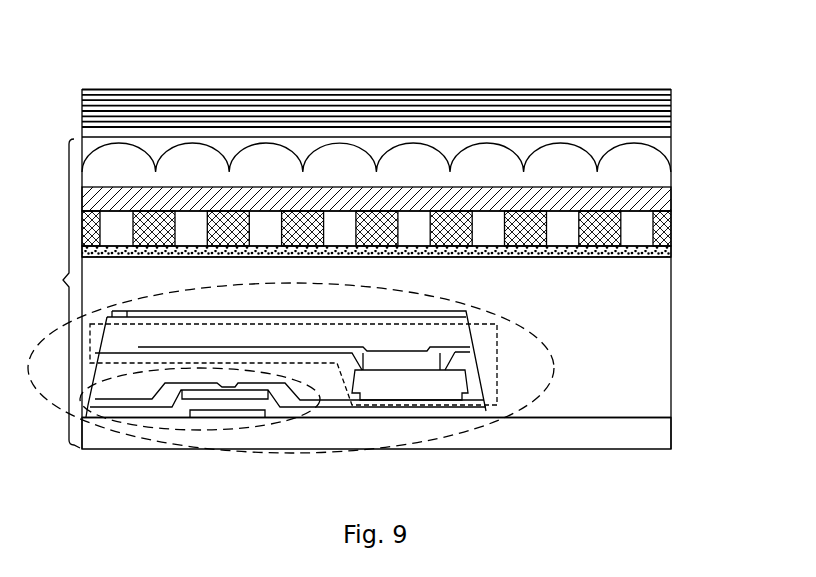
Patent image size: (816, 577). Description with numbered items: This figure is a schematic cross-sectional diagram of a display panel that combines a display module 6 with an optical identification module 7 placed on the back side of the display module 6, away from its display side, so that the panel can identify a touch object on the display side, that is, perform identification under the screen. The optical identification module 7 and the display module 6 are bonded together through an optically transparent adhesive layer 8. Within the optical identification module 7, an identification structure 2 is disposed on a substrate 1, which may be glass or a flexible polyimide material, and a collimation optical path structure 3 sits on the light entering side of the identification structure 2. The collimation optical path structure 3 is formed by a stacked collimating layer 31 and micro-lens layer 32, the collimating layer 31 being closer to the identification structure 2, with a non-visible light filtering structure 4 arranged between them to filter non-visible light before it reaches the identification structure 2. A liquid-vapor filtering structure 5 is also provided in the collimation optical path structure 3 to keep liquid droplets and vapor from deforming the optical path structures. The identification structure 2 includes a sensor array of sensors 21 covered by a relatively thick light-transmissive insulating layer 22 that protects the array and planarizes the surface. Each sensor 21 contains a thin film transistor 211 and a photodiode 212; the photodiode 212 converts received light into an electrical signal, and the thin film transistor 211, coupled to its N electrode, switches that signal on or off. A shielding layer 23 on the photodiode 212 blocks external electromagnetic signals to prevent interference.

The substrate 1 is at (632, 433).
The identification structure 2 is at (672, 337).
The collimation optical path structure 3 is at (416, 192).
The non-visible light filtering structure 4 is at (662, 197).
The liquid-vapor filtering structure 5 is at (671, 251).
The display module 6 is at (637, 102).
The optical identification module 7 is at (65, 293).
The optically transparent adhesive layer 8 is at (93, 135).
The sensor 21 is at (47, 336).
The light-transmissive insulating layer 22 is at (648, 293).
The shielding layer 23 is at (112, 314).
The collimating layer 31 is at (408, 228).
The micro-lens layer 32 is at (671, 157).
The thin film transistor 211 is at (190, 433).
The photodiode 212 is at (497, 377).